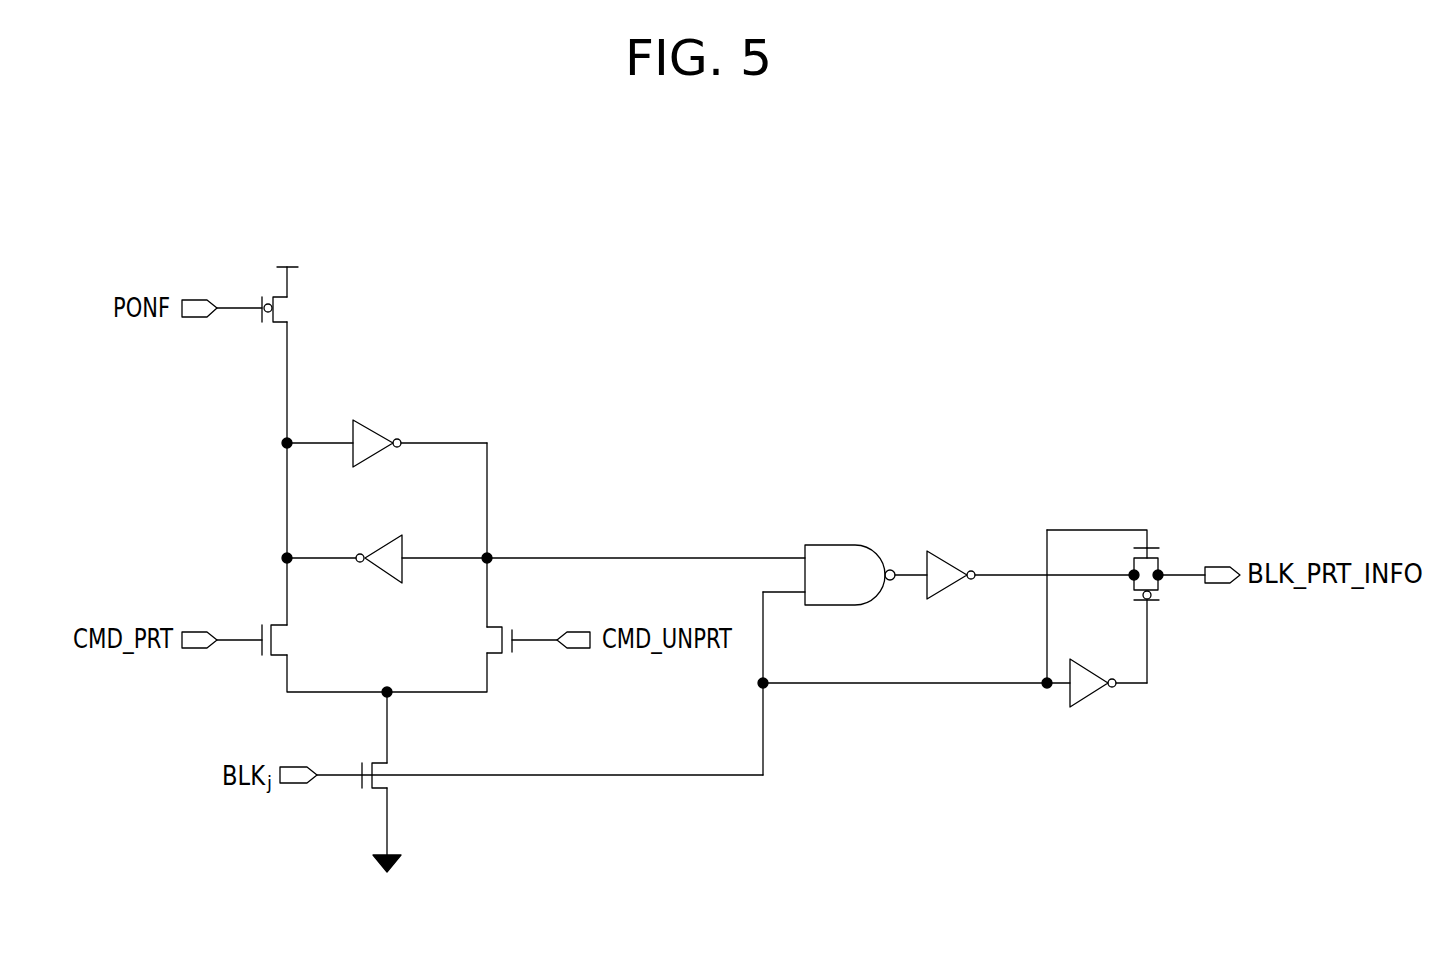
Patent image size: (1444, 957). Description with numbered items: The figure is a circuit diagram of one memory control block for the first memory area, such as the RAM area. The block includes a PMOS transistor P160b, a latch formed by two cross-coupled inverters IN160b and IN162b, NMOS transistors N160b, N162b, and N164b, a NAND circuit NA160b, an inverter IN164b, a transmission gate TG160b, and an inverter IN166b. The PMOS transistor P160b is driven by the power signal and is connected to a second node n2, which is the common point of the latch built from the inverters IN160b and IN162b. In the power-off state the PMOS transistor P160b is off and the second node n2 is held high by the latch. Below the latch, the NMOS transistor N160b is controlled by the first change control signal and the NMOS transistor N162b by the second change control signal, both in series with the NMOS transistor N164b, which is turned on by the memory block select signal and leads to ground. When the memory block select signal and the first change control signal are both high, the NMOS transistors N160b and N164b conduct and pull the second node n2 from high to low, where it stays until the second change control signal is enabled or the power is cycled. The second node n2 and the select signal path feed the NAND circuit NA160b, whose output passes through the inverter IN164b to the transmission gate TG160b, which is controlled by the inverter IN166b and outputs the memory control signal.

The second node n2 is at (287, 443).
The PMOS transistor P160b is at (311, 295).
The inverter IN160b is at (375, 430).
The inverter IN162b is at (385, 542).
The NMOS transistor N160b is at (312, 639).
The NMOS transistor N162b is at (462, 639).
The NMOS transistor N164b is at (415, 740).
The NAND circuit NA160b is at (855, 545).
The inverter IN164b is at (947, 557).
The transmission gate TG160b is at (1158, 563).
The inverter IN166b is at (1090, 697).